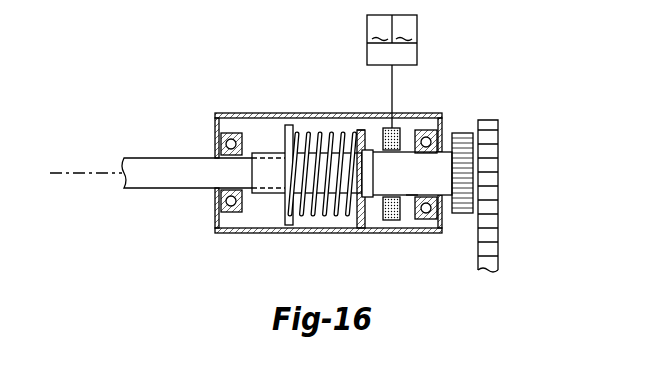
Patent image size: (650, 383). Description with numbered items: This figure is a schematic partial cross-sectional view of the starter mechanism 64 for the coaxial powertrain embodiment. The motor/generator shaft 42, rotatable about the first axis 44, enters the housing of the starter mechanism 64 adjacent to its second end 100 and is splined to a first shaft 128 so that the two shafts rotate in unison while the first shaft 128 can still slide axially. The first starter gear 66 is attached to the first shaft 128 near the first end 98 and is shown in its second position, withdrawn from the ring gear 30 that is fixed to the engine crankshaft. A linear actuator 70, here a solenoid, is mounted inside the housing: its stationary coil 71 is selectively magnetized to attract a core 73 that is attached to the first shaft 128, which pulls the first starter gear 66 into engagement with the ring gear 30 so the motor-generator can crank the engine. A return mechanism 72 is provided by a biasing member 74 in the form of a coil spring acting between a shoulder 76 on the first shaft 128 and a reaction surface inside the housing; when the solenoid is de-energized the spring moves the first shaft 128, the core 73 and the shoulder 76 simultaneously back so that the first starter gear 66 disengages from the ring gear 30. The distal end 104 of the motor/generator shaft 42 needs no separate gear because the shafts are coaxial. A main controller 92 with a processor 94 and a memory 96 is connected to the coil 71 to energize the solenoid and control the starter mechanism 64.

The ring gear 30 is at (498, 249).
The motor/generator shaft 42 is at (157, 170).
The first axis 44 is at (76, 139).
The starter mechanism 64 is at (236, 114).
The first starter gear 66 is at (463, 214).
The linear actuator 70 is at (371, 215).
The coil 71 is at (391, 222).
The return mechanism 72 is at (278, 210).
The core 73 is at (374, 174).
The biasing member 74 is at (322, 132).
The shoulder 76 is at (289, 125).
The main controller 92 is at (411, 71).
The processor 94 is at (381, 29).
The memory 96 is at (417, 55).
The first end 98 is at (443, 117).
The second end 100 is at (215, 224).
The distal end 104 is at (361, 129).
The first shaft 128 is at (412, 196).